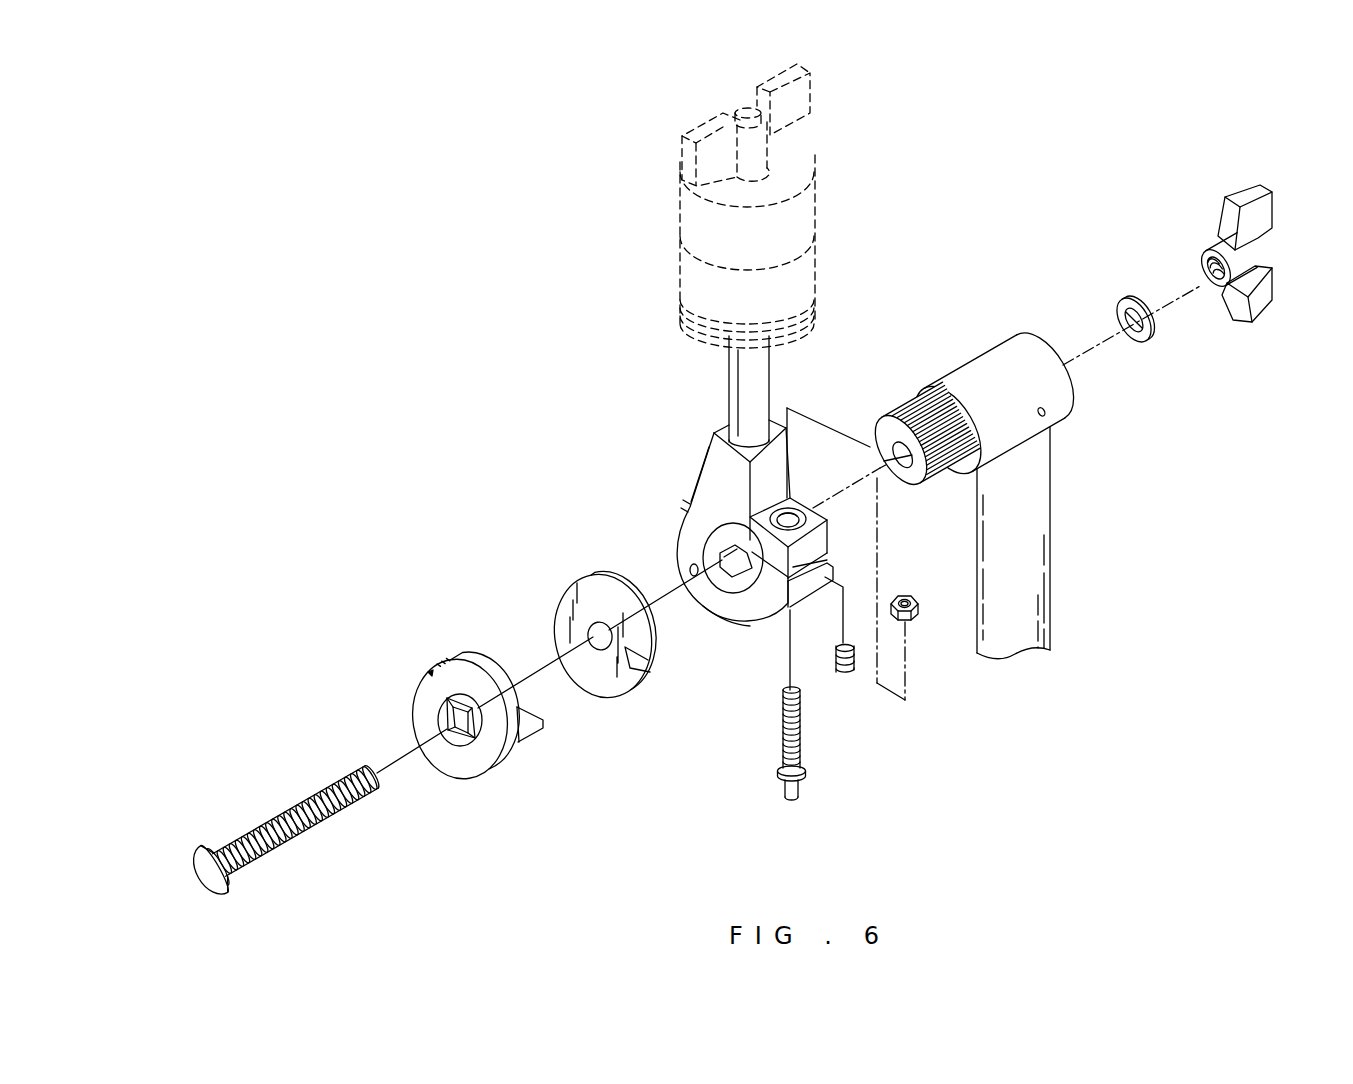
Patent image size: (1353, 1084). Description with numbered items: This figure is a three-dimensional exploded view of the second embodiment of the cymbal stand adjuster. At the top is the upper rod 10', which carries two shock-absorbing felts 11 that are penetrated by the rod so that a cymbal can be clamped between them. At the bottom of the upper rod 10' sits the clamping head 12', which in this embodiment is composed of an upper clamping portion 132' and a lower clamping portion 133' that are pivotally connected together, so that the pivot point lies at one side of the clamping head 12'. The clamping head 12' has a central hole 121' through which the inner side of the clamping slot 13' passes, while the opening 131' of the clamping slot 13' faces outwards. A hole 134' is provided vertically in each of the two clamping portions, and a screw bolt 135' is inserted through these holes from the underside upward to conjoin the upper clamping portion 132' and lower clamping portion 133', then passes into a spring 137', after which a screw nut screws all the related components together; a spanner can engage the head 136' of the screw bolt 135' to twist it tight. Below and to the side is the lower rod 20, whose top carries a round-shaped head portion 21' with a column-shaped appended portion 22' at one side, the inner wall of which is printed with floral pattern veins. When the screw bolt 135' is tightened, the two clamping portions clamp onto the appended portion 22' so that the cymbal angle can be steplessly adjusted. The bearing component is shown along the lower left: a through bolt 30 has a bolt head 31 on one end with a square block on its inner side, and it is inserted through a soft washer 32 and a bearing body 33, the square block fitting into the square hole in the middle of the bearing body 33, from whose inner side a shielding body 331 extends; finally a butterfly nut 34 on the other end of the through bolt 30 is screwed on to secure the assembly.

The felts 11 is at (803, 265).
The upper rod 10' is at (683, 386).
The clamping head 12' is at (685, 520).
The upper clamping portion 132' is at (662, 447).
The hole 134' is at (806, 491).
The central hole 121' is at (689, 557).
The clamping slot 13' is at (780, 623).
The lower clamping portion 133' is at (710, 667).
The opening 131' is at (819, 645).
The screw bolt 135' is at (828, 744).
The head 136' is at (733, 796).
The spring 137' is at (904, 669).
The head portion 21' is at (994, 374).
The appended portion 22' is at (919, 418).
The lower rod 20 is at (1031, 523).
The butterfly nut 34 is at (1247, 196).
The through bolt 30 is at (257, 830).
The bolt head 31 is at (188, 865).
The soft washer 32 is at (613, 686).
The bearing body 33 is at (453, 754).
The shielding body 331 is at (533, 738).